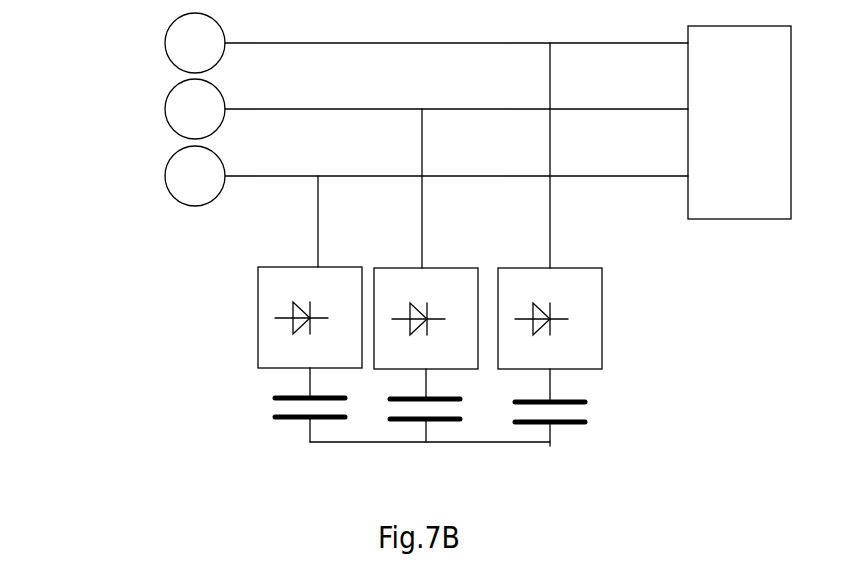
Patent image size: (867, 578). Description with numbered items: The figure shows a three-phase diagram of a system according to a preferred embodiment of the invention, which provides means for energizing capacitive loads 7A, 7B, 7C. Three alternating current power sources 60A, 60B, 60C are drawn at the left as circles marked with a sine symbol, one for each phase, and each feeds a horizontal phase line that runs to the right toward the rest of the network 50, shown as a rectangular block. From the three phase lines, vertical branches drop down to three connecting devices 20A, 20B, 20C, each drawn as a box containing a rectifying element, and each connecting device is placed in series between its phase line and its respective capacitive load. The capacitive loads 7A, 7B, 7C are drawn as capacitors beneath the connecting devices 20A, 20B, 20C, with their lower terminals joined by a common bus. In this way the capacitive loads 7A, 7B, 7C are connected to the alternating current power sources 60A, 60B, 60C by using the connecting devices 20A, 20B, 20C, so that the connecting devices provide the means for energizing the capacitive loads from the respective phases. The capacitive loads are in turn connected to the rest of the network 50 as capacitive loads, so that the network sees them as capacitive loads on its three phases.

The alternating current power source 60A is at (164, 45).
The alternating current power source 60B is at (164, 111).
The alternating current power source 60C is at (165, 178).
The rest of the network 50 is at (730, 212).
The connecting device 20A is at (258, 293).
The connecting device 20B is at (455, 280).
The connecting device 20C is at (592, 298).
The capacitive load 7A is at (277, 397).
The capacitive load 7B is at (400, 415).
The capacitive load 7C is at (575, 400).